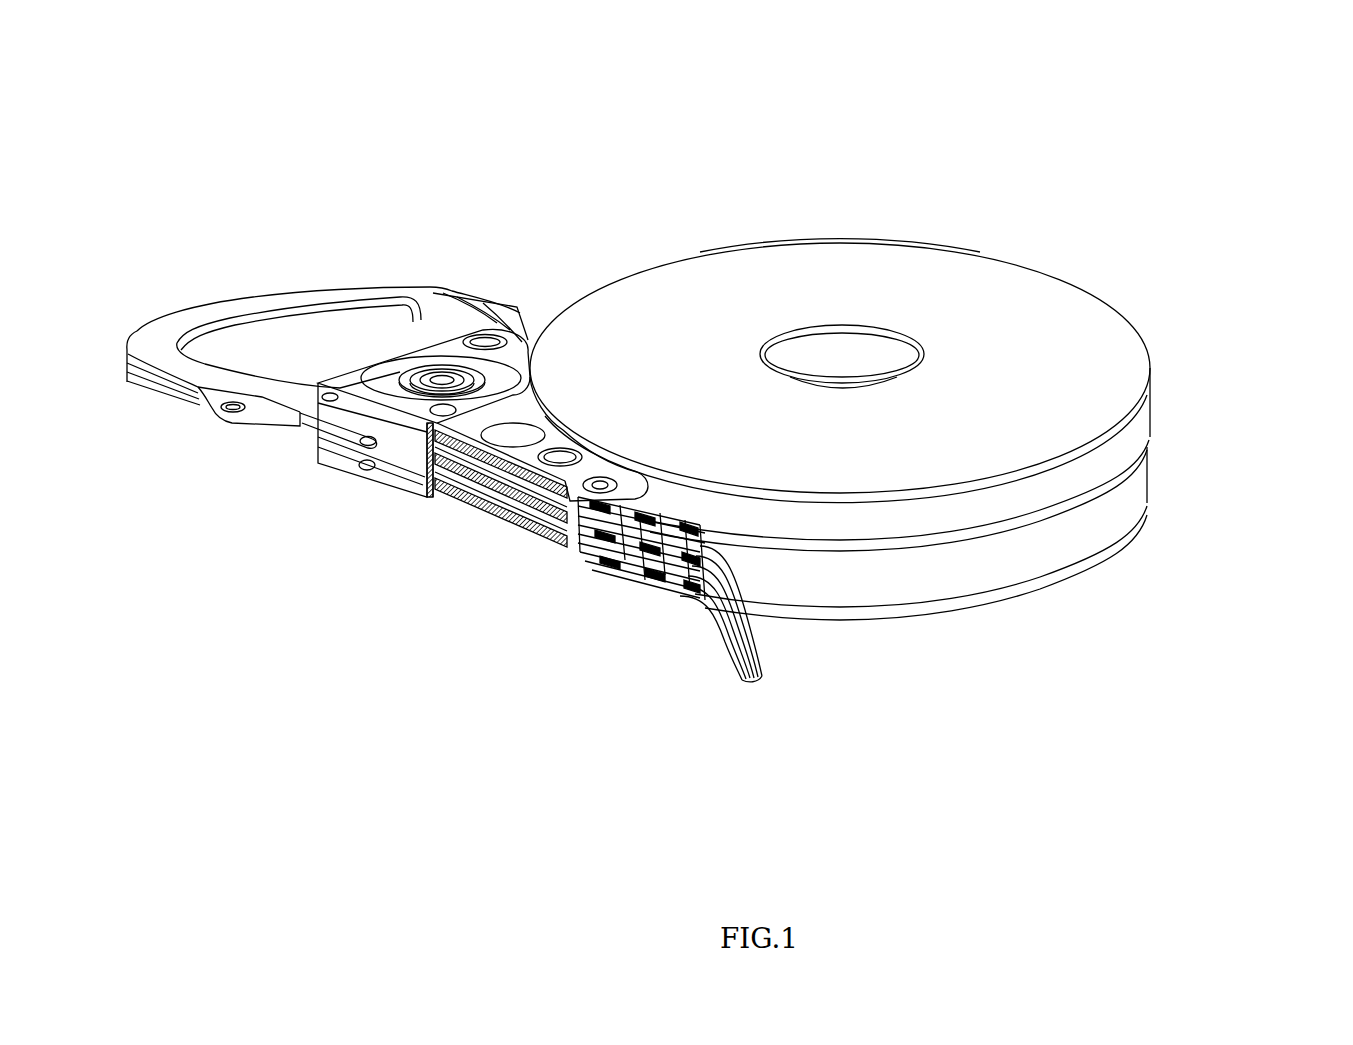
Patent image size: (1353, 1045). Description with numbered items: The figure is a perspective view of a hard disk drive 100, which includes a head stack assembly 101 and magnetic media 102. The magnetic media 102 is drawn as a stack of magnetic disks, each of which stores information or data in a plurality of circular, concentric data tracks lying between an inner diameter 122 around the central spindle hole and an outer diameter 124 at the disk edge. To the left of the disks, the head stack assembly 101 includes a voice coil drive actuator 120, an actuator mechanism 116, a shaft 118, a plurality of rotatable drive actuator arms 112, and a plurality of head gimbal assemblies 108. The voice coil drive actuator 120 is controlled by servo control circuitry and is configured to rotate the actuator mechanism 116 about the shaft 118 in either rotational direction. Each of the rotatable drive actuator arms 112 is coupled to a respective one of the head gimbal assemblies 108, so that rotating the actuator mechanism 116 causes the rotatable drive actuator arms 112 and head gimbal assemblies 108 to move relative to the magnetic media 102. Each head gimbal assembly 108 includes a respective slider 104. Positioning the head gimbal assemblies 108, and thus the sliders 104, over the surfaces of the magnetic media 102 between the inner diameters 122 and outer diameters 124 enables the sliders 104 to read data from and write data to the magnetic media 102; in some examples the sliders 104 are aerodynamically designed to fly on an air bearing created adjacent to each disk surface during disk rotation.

The hard disk drive 100 is at (1234, 79).
The head stack assembly 101 is at (296, 524).
The magnetic media 102 is at (991, 250).
The slider 104 is at (741, 616).
The head gimbal assembly 108 is at (690, 505).
The rotatable drive actuator arm 112 is at (466, 485).
The actuator mechanism 116 is at (520, 307).
The shaft 118 is at (447, 383).
The voice coil drive actuator 120 is at (264, 291).
The inner diameter 122 is at (840, 378).
The outer diameter 124 is at (795, 246).